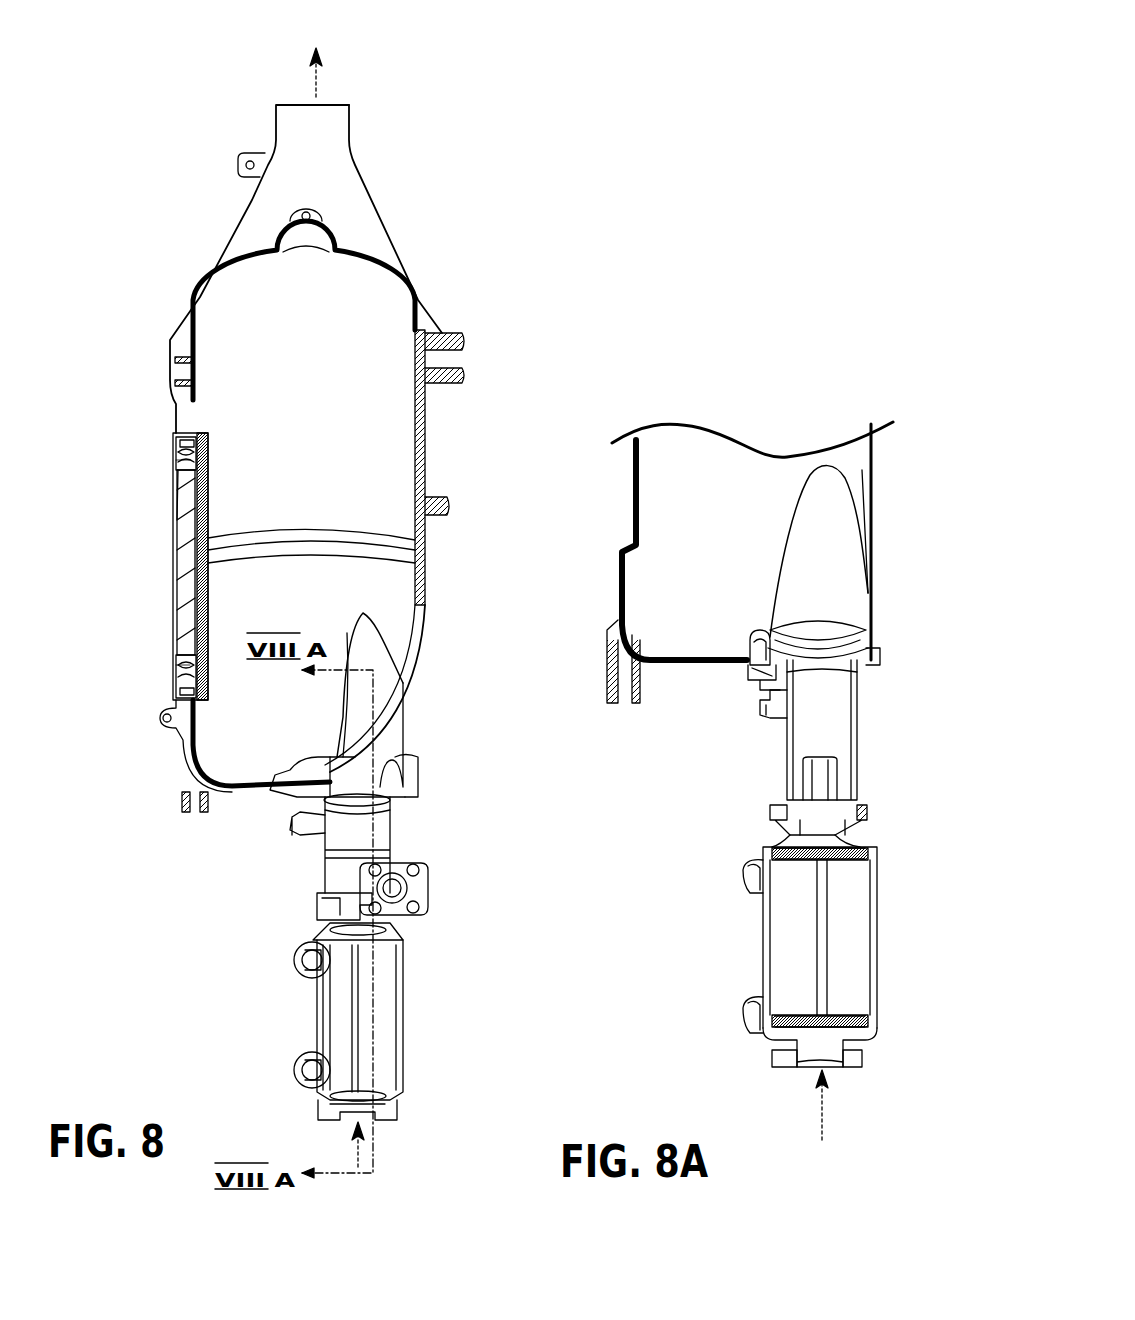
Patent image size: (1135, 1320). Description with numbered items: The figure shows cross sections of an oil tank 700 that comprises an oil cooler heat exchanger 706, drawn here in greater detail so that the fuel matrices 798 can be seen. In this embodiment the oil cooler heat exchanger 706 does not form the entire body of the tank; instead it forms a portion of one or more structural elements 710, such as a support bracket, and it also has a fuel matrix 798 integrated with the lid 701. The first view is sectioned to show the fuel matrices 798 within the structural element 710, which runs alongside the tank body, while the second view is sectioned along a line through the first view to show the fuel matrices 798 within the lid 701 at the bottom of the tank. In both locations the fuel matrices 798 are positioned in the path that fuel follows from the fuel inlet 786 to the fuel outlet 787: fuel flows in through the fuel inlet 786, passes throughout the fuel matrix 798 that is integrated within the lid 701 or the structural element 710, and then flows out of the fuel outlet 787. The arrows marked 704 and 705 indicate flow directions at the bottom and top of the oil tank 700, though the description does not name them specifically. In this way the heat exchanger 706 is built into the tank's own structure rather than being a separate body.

In FIG. 8, the oil tank 700 is at (410, 186).
In FIG. 8A, the oil tank 700 is at (905, 468).
In FIG. 8, the lid 701 is at (418, 978).
In FIG. 8A, the lid 701 is at (886, 934).
In FIG. 8, the inlet flow 704 is at (357, 1155).
In FIG. 8A, the inlet flow 704 is at (820, 1120).
In FIG. 8, the outlet flow 705 is at (318, 82).
In FIG. 8, the oil cooler heat exchanger 706 is at (578, 214).
In FIG. 8, the structural element 710 is at (163, 553).
In FIG. 8, the fuel inlet 786 is at (150, 476).
In FIG. 8A, the fuel inlet 786 is at (723, 1008).
In FIG. 8, the fuel outlet 787 is at (163, 663).
In FIG. 8A, the fuel outlet 787 is at (738, 878).
In FIG. 8, the fuel matrix 798 is at (177, 460).
In FIG. 8A, the fuel matrix 798 is at (846, 838).